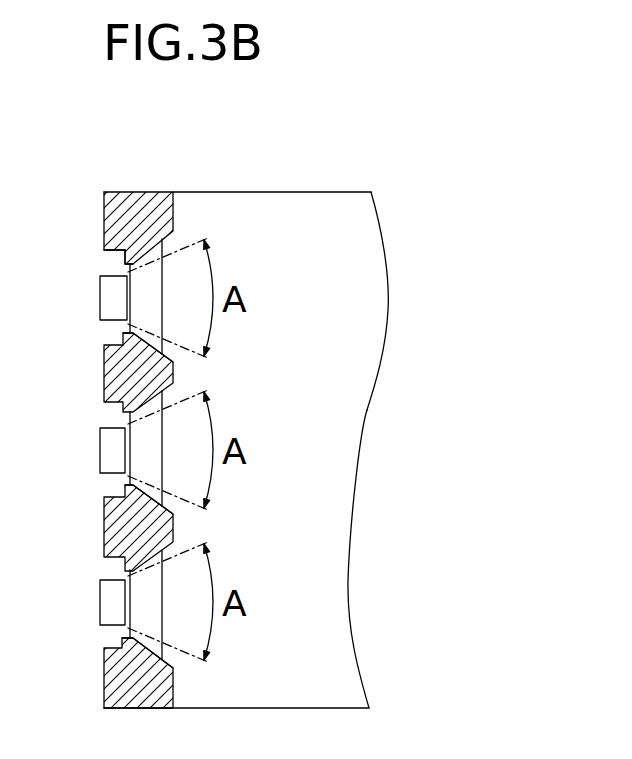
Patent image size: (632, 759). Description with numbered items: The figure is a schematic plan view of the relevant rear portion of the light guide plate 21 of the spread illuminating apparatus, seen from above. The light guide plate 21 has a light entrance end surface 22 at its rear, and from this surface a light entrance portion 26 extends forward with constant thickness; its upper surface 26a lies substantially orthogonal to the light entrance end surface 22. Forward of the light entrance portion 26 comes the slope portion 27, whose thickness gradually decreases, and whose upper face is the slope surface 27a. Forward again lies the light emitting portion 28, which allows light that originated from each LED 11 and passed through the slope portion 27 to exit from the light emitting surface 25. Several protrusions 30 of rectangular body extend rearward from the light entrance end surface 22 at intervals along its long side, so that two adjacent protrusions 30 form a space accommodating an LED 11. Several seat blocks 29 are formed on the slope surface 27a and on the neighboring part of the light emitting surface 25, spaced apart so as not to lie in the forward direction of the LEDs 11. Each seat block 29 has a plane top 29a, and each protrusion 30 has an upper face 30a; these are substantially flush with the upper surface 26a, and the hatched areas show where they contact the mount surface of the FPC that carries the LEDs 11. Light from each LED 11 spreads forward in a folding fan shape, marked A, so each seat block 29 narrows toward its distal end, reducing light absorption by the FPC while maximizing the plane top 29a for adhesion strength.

The light guide plate 21 is at (357, 183).
The light entrance end surface 22 is at (104, 254).
The light entrance portion 26 is at (125, 263).
The upper surface 26a is at (128, 268).
The LED 11 is at (108, 302).
The slope portion 27 is at (127, 329).
The slope surface 27a is at (128, 337).
The seat block 29 is at (150, 521).
The plane top 29a is at (147, 530).
The protrusion 30 is at (118, 651).
The upper face 30a is at (115, 668).
The light emitting surface 25 is at (365, 366).
The light emitting portion 28 is at (343, 448).